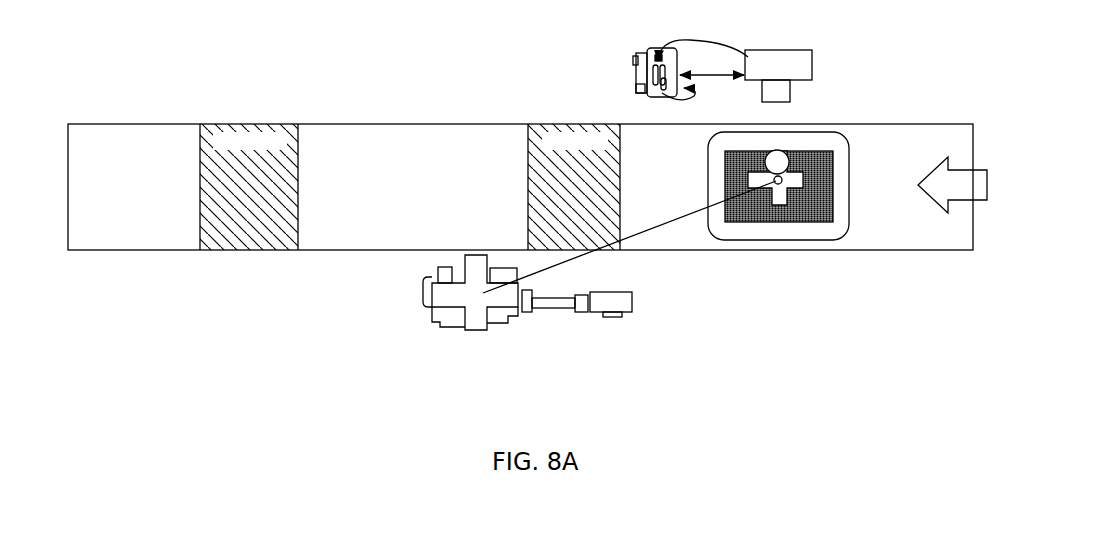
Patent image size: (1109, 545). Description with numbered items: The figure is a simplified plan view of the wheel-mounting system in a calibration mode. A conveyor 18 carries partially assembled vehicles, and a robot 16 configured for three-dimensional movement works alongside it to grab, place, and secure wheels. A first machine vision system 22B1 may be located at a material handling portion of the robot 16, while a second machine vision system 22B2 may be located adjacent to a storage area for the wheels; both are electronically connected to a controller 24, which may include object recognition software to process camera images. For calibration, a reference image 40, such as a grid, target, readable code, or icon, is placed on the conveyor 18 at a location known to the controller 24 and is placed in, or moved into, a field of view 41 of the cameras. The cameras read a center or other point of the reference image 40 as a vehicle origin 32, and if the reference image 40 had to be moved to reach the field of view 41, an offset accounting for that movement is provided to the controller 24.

The robot 16 is at (412, 300).
The conveyor 18 is at (897, 237).
The first machine vision system 22B1 is at (821, 63).
The second machine vision system 22B2 is at (607, 326).
The controller 24 is at (610, 76).
The vehicle origin 32 is at (777, 184).
The reference image 40 is at (810, 223).
The field of view 41 is at (838, 143).